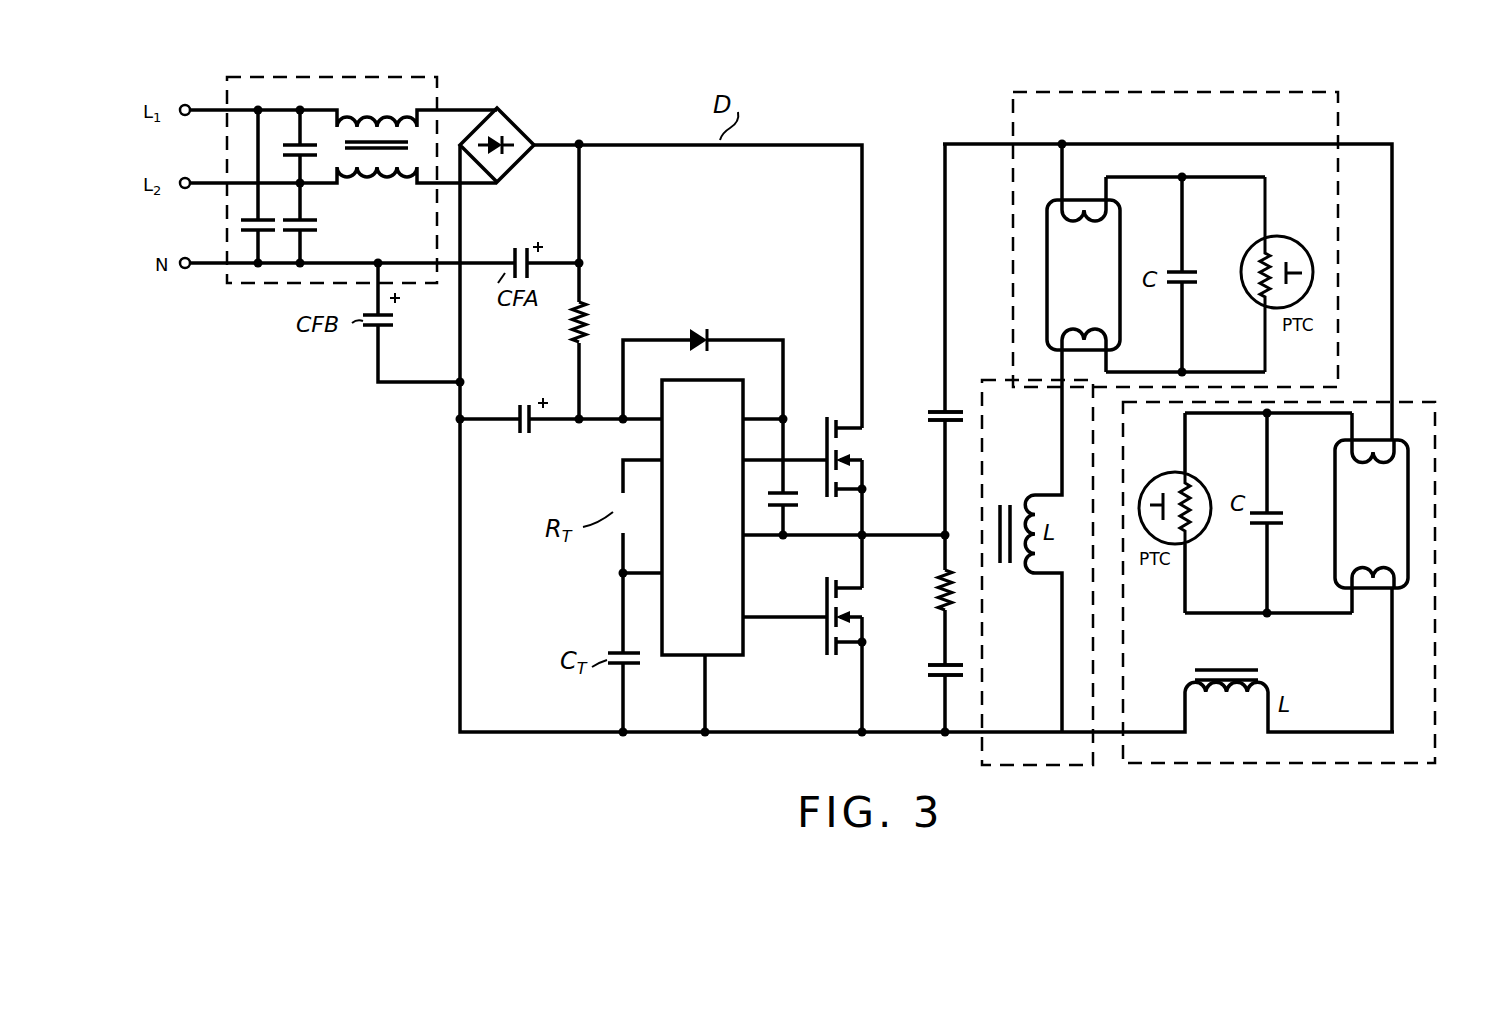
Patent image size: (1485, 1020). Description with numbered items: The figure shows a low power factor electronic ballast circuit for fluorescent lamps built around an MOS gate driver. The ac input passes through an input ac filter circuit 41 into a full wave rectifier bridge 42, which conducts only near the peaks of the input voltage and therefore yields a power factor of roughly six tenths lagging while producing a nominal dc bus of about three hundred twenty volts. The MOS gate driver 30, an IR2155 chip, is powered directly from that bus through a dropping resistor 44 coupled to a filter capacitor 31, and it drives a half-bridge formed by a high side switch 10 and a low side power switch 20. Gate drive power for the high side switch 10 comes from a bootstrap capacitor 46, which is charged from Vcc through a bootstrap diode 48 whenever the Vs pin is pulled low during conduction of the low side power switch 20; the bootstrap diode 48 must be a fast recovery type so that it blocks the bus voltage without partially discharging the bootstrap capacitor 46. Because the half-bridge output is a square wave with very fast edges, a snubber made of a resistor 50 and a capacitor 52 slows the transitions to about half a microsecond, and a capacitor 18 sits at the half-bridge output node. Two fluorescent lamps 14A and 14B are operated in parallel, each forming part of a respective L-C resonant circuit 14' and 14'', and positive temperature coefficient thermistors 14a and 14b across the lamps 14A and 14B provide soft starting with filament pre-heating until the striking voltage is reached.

The high side switch 10 is at (870, 443).
The low side power switch 20 is at (867, 600).
The MOS gate driver 30 is at (737, 657).
The filter capacitor 31 is at (540, 372).
The input ac filter circuit 41 is at (283, 77).
The full wave rectifier bridge 42 is at (508, 120).
The dropping resistor 44 is at (593, 312).
The bootstrap capacitor 46 is at (805, 498).
The bootstrap diode 48 is at (700, 318).
The capacitor 18 is at (926, 416).
The snubber resistor 50 is at (928, 580).
The snubber capacitor 52 is at (921, 667).
The L-C resonant circuit 14' is at (1175, 213).
The L-C resonant circuit 14'' is at (1296, 549).
The fluorescent lamp 14A is at (1125, 250).
The positive temperature coefficient thermistor 14a is at (1288, 240).
The fluorescent lamp 14B is at (1333, 523).
The positive temperature coefficient thermistor 14b is at (1207, 527).